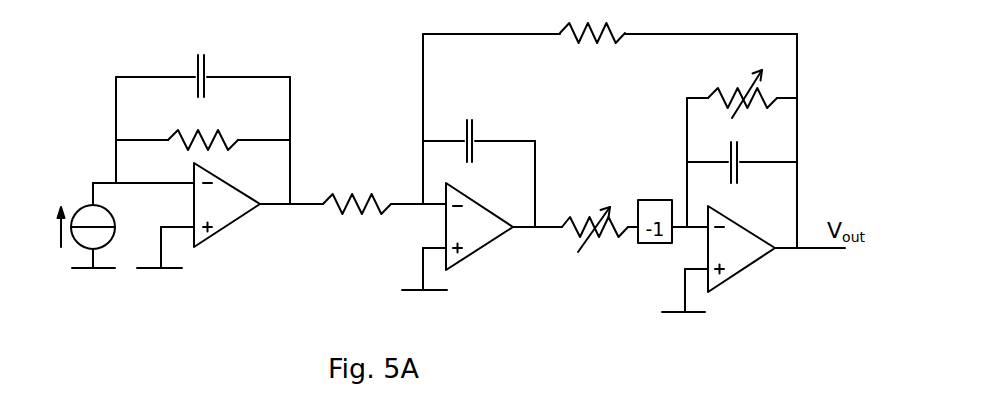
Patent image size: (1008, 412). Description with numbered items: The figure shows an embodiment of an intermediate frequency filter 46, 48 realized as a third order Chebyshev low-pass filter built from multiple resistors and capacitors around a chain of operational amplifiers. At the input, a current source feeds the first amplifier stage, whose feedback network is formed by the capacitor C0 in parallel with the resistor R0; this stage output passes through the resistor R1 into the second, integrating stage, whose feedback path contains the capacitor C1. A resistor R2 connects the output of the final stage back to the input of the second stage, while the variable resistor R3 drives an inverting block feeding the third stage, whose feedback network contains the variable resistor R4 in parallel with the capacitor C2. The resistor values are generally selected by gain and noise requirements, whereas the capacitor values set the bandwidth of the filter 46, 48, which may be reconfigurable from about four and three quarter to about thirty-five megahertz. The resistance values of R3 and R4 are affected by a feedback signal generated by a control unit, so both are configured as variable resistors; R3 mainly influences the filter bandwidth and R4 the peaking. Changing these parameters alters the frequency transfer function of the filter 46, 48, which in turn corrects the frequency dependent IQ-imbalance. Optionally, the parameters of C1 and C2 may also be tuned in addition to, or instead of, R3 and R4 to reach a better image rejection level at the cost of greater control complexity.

The IF filter 46 is at (108, 254).
The IF filter 48 is at (108, 266).
The capacitor C0 is at (203, 64).
The resistor R0 is at (203, 128).
The resistor R1 is at (357, 189).
The capacitor C1 is at (479, 123).
The resistor R2 is at (610, 21).
The variable resistor R3 is at (595, 212).
The variable resistor R4 is at (742, 89).
The capacitor C2 is at (742, 173).